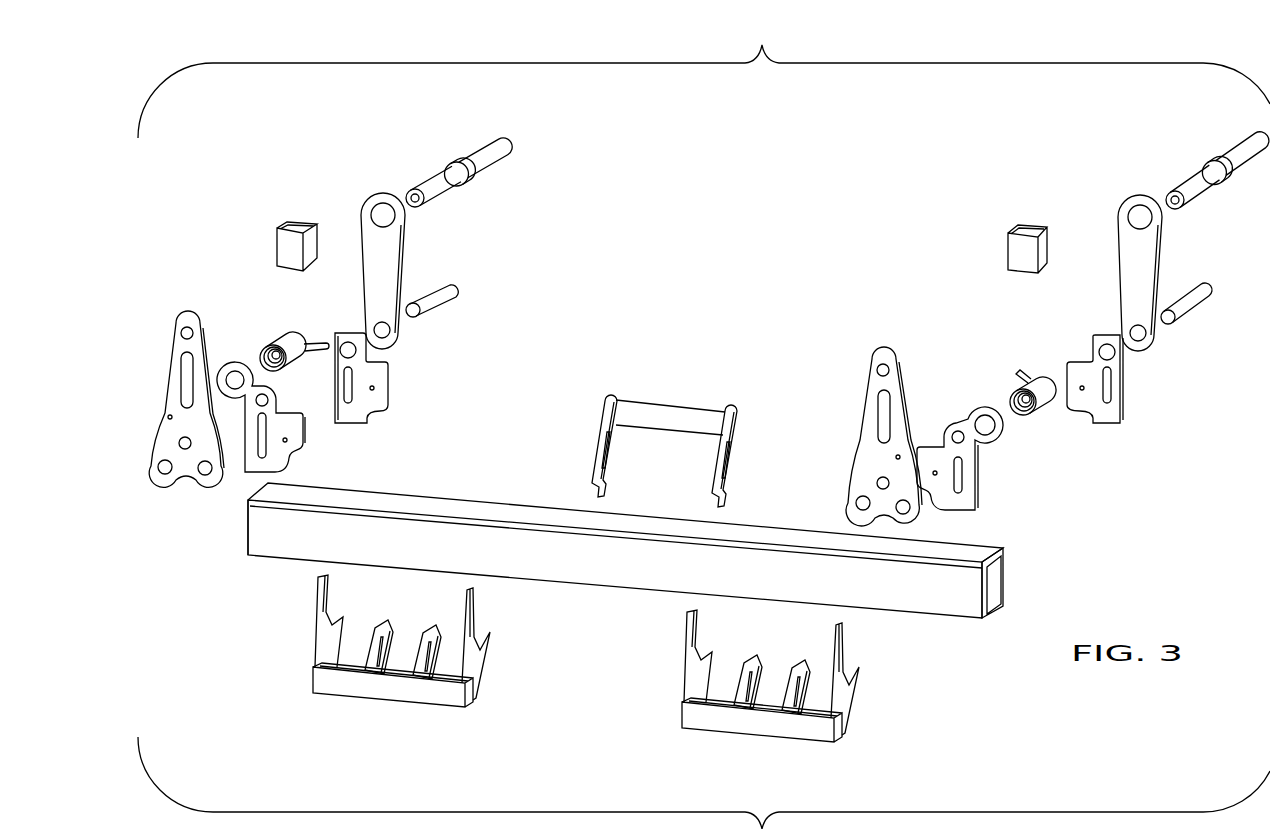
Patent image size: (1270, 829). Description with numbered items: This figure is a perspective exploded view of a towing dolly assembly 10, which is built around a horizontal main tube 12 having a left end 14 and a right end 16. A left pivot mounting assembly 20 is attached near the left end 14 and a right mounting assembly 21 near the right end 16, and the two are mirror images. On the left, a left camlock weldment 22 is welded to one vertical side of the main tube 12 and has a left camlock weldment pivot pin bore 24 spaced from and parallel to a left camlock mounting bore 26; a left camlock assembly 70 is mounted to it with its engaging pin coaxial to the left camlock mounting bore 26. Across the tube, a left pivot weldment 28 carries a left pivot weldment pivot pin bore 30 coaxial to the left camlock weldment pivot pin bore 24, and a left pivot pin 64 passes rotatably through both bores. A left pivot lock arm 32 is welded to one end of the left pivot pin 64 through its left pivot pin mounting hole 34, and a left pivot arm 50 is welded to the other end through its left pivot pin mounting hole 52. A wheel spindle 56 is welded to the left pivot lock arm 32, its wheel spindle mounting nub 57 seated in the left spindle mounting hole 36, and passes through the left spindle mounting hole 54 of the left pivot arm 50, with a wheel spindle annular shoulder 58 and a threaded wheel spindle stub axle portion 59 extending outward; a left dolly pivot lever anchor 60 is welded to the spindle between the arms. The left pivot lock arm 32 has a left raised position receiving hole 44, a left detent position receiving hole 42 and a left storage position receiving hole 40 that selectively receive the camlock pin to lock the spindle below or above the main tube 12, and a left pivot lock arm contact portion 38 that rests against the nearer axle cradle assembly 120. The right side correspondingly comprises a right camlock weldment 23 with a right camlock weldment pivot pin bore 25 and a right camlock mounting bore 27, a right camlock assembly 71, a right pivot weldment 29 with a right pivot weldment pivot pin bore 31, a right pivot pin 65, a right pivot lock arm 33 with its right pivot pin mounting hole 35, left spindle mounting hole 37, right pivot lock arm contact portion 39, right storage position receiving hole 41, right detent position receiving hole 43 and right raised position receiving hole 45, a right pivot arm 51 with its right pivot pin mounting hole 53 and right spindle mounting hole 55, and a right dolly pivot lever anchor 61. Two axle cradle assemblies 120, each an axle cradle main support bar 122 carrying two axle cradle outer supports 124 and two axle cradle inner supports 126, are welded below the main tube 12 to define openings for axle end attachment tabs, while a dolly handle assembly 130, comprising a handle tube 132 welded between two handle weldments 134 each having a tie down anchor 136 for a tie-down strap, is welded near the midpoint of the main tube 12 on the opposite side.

The towing dolly assembly 10 is at (805, 287).
The main tube 12 is at (620, 572).
The left end 14 is at (272, 548).
The right end 16 is at (972, 610).
The left pivot mounting assembly 20 is at (309, 327).
The right mounting assembly 21 is at (1018, 348).
The left camlock weldment 22 is at (276, 400).
The right camlock weldment 23 is at (981, 447).
The left camlock weldment pivot pin bore 24 is at (272, 398).
The right camlock weldment pivot pin bore 25 is at (958, 429).
The left camlock mounting bore 26 is at (236, 366).
The right camlock mounting bore 27 is at (1002, 431).
The left pivot weldment 28 is at (371, 370).
The right pivot weldment 29 is at (1111, 387).
The left pivot weldment pivot pin bore 30 is at (343, 340).
The right pivot weldment pivot pin bore 31 is at (1104, 344).
The left pivot lock arm 32 is at (183, 404).
The right pivot lock arm 33 is at (883, 440).
The left pivot pin mounting hole 34 is at (185, 451).
The right pivot pin mounting hole 35 is at (876, 484).
The left spindle mounting hole 36 is at (192, 326).
The left spindle mounting hole 37 is at (876, 370).
The left pivot lock arm contact portion 38 is at (175, 330).
The right pivot lock arm contact portion 39 is at (896, 353).
The left storage position receiving hole 40 is at (166, 476).
The right storage position receiving hole 41 is at (912, 514).
The left detent position receiving hole 42 is at (166, 416).
The right detent position receiving hole 43 is at (900, 455).
The left raised position receiving hole 44 is at (207, 477).
The right raised position receiving hole 45 is at (855, 506).
The left pivot arm 50 is at (383, 269).
The right pivot arm 51 is at (1139, 273).
The left pivot pin mounting hole 52 is at (402, 342).
The right pivot pin mounting hole 53 is at (1152, 343).
The left spindle mounting hole 54 is at (372, 206).
The right spindle mounting hole 55 is at (1130, 208).
The wheel spindle 56 is at (835, 161).
The wheel spindle mounting nub 57 is at (413, 189).
The wheel spindle annular shoulder 58 is at (468, 189).
The wheel spindle stub axle portion 59 is at (486, 166).
The left dolly pivot lever anchor 60 is at (278, 247).
The right dolly pivot lever anchor 61 is at (1015, 255).
The left pivot pin 64 is at (445, 302).
The right pivot pin 65 is at (1190, 306).
The left camlock assembly 70 is at (291, 334).
The right camlock assembly 71 is at (1046, 387).
The axle cradle assembly 120 is at (585, 676).
The axle cradle main support bar 122 is at (340, 686).
The axle cradle outer support 124 is at (326, 637).
The axle cradle inner support 126 is at (386, 669).
The dolly handle assembly 130 is at (672, 432).
The handle tube 132 is at (660, 406).
The handle weldment 134 is at (672, 451).
The tie down anchor 136 is at (614, 448).